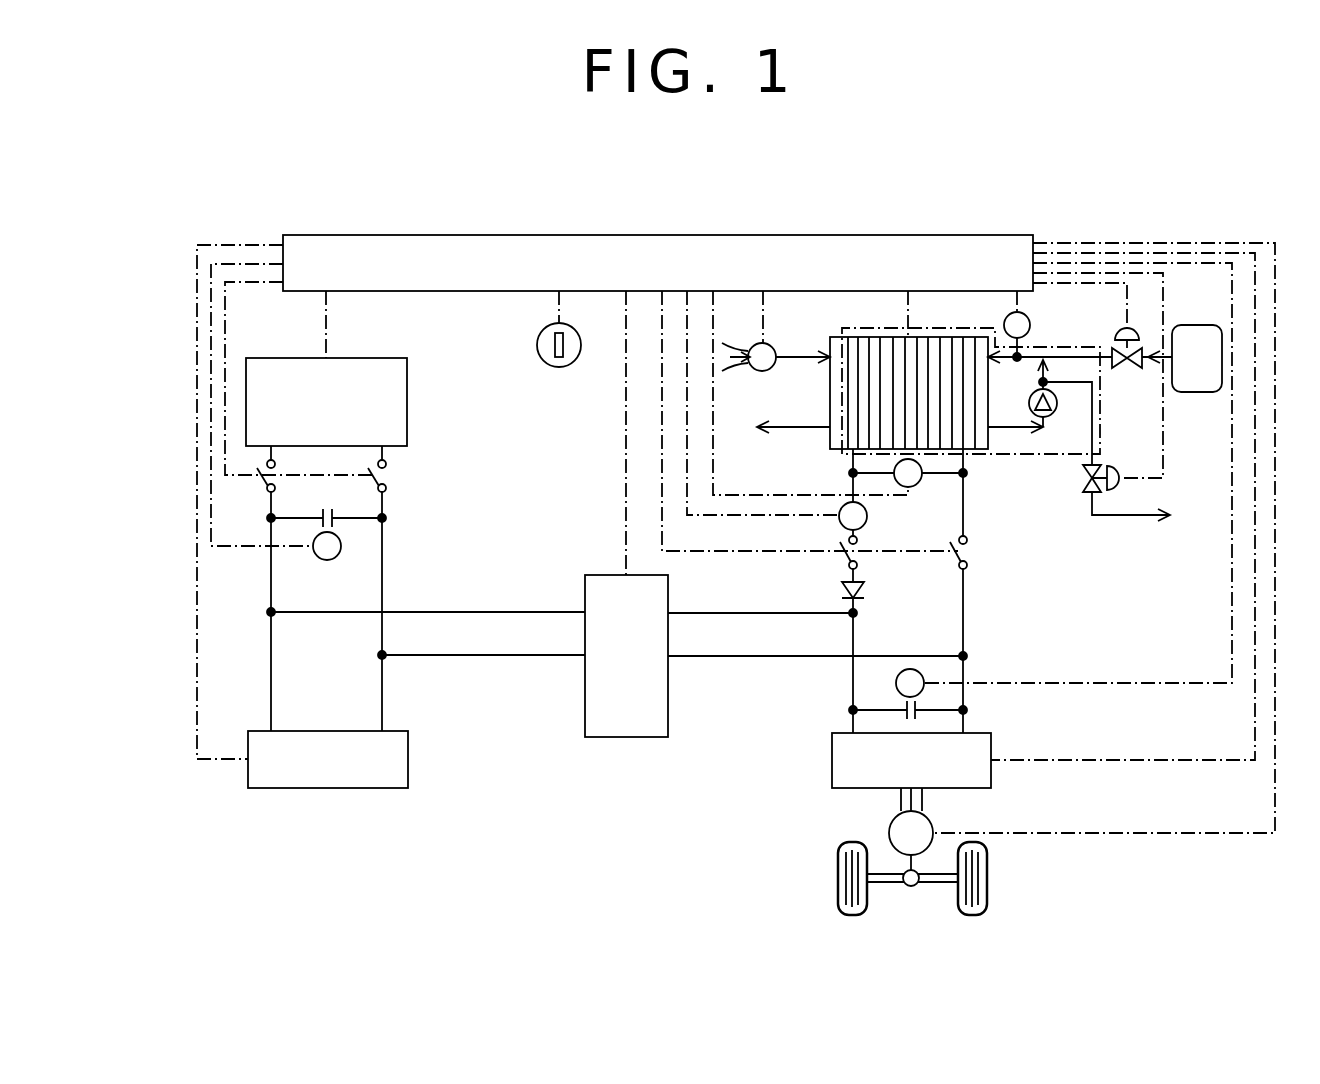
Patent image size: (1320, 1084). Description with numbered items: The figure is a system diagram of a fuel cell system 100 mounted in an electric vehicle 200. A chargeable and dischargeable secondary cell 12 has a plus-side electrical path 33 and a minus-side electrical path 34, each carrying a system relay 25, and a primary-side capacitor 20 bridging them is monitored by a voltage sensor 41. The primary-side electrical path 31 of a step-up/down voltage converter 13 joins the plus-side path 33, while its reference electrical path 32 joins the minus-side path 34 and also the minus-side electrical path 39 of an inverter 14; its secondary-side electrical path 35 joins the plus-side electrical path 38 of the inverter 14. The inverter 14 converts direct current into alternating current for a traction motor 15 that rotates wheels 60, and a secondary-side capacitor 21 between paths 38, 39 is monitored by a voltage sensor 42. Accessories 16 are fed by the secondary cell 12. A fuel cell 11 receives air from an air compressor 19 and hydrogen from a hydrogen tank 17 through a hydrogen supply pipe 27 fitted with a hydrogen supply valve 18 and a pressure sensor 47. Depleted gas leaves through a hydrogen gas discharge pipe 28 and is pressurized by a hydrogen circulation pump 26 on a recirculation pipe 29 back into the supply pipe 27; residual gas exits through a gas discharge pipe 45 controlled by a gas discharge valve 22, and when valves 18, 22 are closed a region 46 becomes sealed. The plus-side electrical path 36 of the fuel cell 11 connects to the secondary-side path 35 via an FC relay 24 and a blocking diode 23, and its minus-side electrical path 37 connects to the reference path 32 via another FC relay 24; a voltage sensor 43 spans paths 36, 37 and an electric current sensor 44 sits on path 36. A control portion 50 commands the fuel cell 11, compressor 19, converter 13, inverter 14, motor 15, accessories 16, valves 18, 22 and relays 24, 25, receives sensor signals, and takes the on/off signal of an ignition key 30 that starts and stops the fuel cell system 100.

The fuel cell system 100 is at (221, 233).
The electric vehicle 200 is at (1168, 843).
The control portion 50 is at (912, 235).
The secondary cell 12 is at (383, 358).
The ignition key 30 is at (559, 367).
The system relay 25 is at (386, 480).
The primary-side capacitor 20 is at (337, 510).
The plus-side electrical path of the secondary cell 33 is at (269, 528).
The minus-side electrical path of the secondary cell 34 is at (383, 538).
The voltage sensor 41 is at (318, 557).
The primary-side electrical path 31 is at (505, 612).
The reference electrical path 32 is at (505, 655).
The step-up/down voltage converter 13 is at (626, 737).
The accessories 16 is at (327, 788).
The secondary-side electrical path 35 is at (697, 613).
The air compressor 19 is at (774, 348).
The fuel cell 11 is at (940, 337).
The pressure sensor 47 is at (1030, 322).
The hydrogen supply pipe 27 is at (1008, 362).
The hydrogen supply valve 18 is at (1137, 338).
The hydrogen tank 17 is at (1197, 325).
The recirculation pipe 29 is at (1048, 376).
The hydrogen circulation pump 26 is at (1050, 418).
The hydrogen gas discharge pipe 28 is at (1007, 430).
The gas discharge pipe 45 is at (1100, 407).
The gas discharge valve 22 is at (1108, 460).
The region 46 is at (1055, 455).
The plus-side electrical path of the fuel cell 36 is at (852, 487).
The voltage sensor 43 is at (922, 480).
The electric current sensor 44 is at (866, 515).
The FC relay 24 is at (843, 565).
The blocking diode 23 is at (867, 590).
The plus-side electrical path of the inverter 38 is at (853, 680).
The minus-side electrical path of the fuel cell 37 is at (968, 540).
The minus-side electrical path of the inverter 39 is at (963, 656).
The voltage sensor 42 is at (920, 672).
The secondary-side capacitor 21 is at (920, 715).
The inverter 14 is at (832, 762).
The traction motor 15 is at (889, 833).
The wheels 60 is at (987, 875).